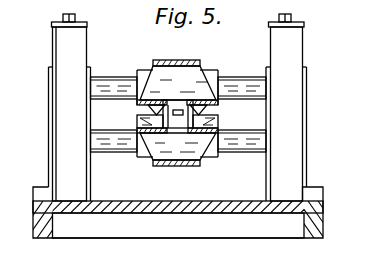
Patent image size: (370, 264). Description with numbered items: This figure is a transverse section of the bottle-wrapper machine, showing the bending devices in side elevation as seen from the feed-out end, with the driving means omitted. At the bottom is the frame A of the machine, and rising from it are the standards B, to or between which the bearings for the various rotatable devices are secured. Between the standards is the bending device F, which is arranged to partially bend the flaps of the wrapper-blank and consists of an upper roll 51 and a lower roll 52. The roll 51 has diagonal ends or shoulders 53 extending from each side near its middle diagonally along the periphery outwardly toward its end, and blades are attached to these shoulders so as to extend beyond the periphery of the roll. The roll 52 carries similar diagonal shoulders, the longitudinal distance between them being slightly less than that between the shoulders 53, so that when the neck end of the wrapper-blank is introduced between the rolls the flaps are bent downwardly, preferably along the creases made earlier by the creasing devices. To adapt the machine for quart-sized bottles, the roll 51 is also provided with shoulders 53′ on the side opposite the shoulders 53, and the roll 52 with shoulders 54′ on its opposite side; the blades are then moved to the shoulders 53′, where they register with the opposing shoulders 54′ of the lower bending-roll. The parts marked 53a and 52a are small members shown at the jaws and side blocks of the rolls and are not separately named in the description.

The diagonal ends or shoulders 53 is at (162, 68).
The roll 51 is at (186, 61).
The bending device F is at (221, 53).
The shoulders 53′ is at (202, 66).
The wedge jaws 53a is at (148, 107).
The side blocks 52a is at (218, 122).
The roll 52 is at (176, 166).
The shoulders 54′ is at (153, 162).
The standards B is at (286, 107).
The frame A is at (175, 213).